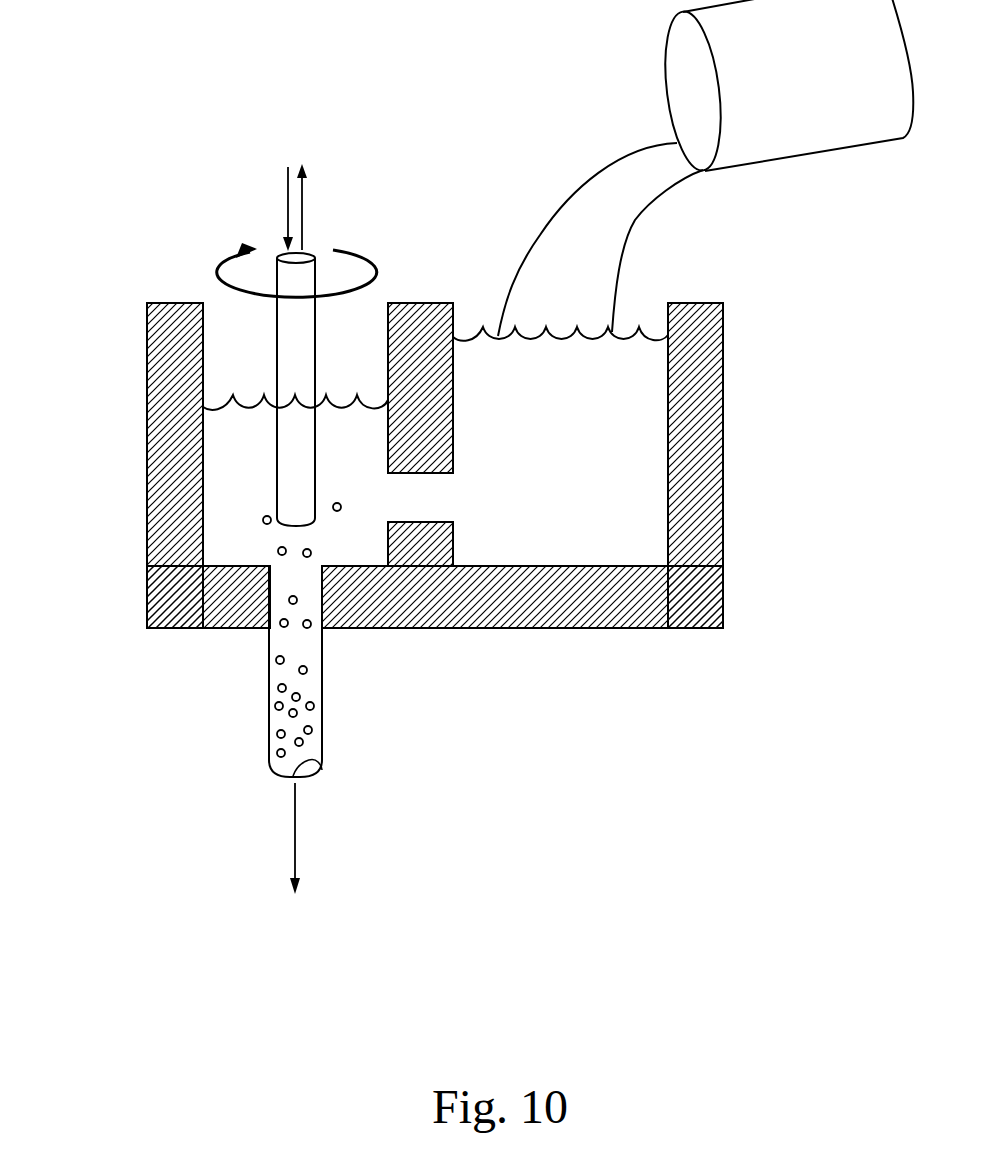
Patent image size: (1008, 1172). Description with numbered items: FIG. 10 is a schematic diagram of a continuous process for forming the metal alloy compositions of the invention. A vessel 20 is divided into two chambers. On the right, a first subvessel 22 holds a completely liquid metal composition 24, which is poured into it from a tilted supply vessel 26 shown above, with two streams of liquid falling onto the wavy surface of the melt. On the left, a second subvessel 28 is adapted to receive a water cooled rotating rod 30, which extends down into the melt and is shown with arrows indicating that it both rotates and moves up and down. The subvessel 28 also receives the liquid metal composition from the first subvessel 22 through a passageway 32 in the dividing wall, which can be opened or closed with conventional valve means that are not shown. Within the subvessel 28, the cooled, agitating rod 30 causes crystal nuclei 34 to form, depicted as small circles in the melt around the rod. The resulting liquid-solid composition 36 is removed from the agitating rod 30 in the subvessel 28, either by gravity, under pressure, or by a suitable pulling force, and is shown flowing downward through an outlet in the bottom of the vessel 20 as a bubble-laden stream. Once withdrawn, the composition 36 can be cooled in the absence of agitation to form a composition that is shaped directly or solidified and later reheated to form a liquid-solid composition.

The vessel 20 is at (491, 465).
The first subvessel 22 is at (707, 467).
The liquid metal composition 24 is at (435, 389).
The vessel 26 is at (800, 94).
The subvessel 28 is at (157, 468).
The water cooled rotating rod 30 is at (287, 375).
The passageway 32 is at (442, 494).
The crystal nuclei 34 is at (311, 553).
The liquid-solid composition 36 is at (307, 670).